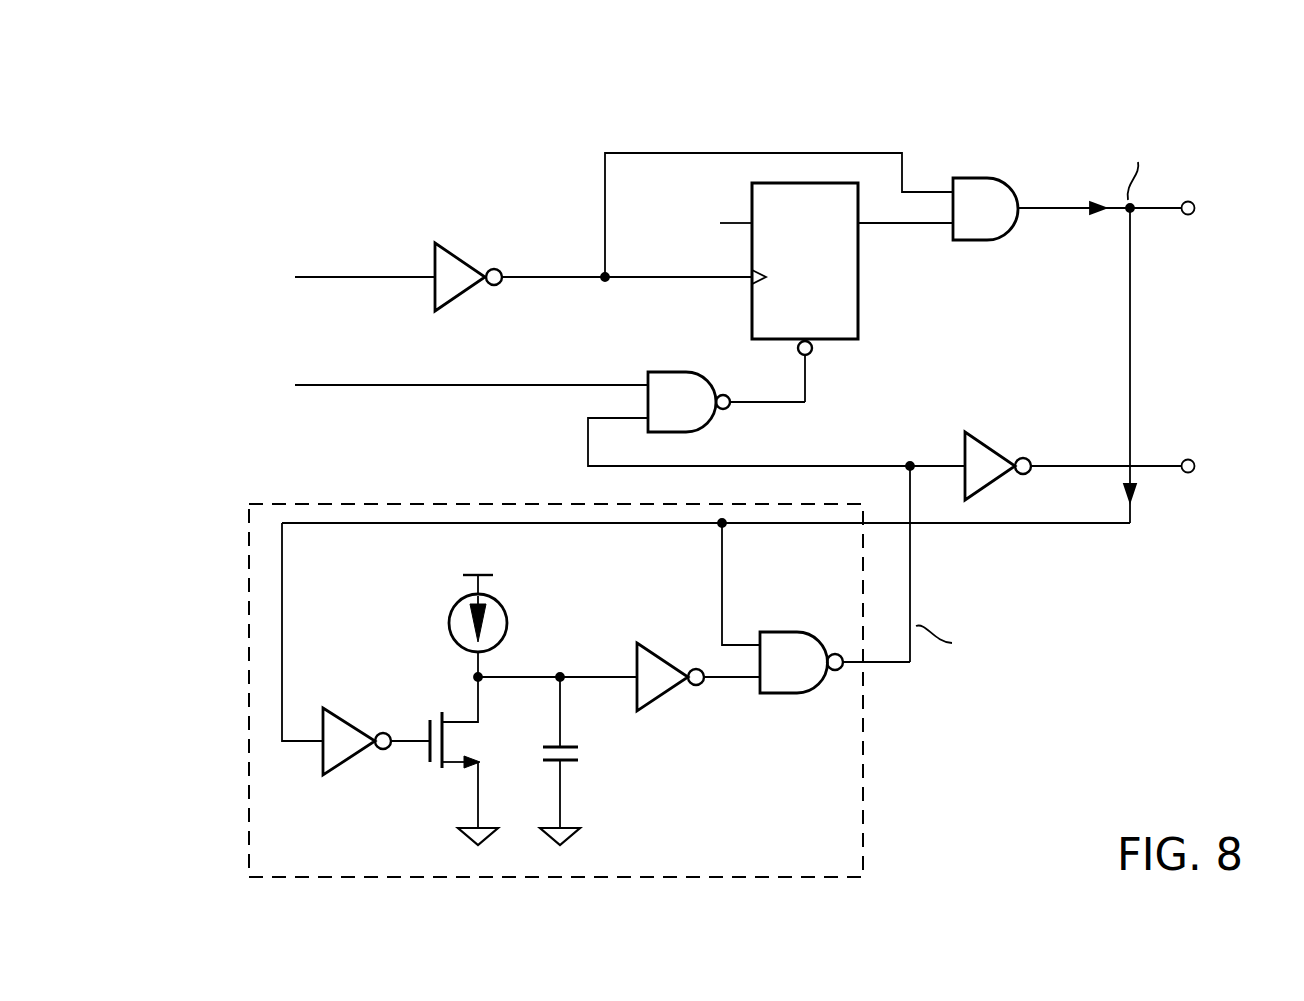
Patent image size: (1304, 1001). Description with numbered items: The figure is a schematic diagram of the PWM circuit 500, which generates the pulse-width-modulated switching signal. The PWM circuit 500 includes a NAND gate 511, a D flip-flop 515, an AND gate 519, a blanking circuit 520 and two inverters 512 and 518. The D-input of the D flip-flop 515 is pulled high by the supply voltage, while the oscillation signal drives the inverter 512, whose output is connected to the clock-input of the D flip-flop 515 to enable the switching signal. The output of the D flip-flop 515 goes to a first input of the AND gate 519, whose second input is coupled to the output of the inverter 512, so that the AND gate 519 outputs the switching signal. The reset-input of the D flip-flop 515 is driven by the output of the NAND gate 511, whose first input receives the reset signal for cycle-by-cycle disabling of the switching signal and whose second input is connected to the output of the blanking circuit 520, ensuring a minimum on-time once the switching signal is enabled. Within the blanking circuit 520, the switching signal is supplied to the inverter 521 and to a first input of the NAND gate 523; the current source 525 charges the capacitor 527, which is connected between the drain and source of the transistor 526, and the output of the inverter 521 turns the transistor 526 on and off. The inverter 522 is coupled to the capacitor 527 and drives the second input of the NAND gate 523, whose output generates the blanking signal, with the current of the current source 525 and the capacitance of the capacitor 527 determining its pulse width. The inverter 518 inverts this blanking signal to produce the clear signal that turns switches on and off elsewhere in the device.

The PWM circuit 500 is at (1263, 70).
The NAND gate 511 is at (672, 372).
The inverter 512 is at (458, 243).
The D flip-flop 515 is at (862, 322).
The inverter 518 is at (990, 436).
The AND gate 519 is at (975, 243).
The blanking circuit 520 is at (248, 577).
The inverter 521 is at (345, 708).
The inverter 522 is at (660, 650).
The NAND gate 523 is at (782, 698).
The current source 525 is at (511, 615).
The transistor 526 is at (435, 775).
The capacitor 527 is at (582, 752).